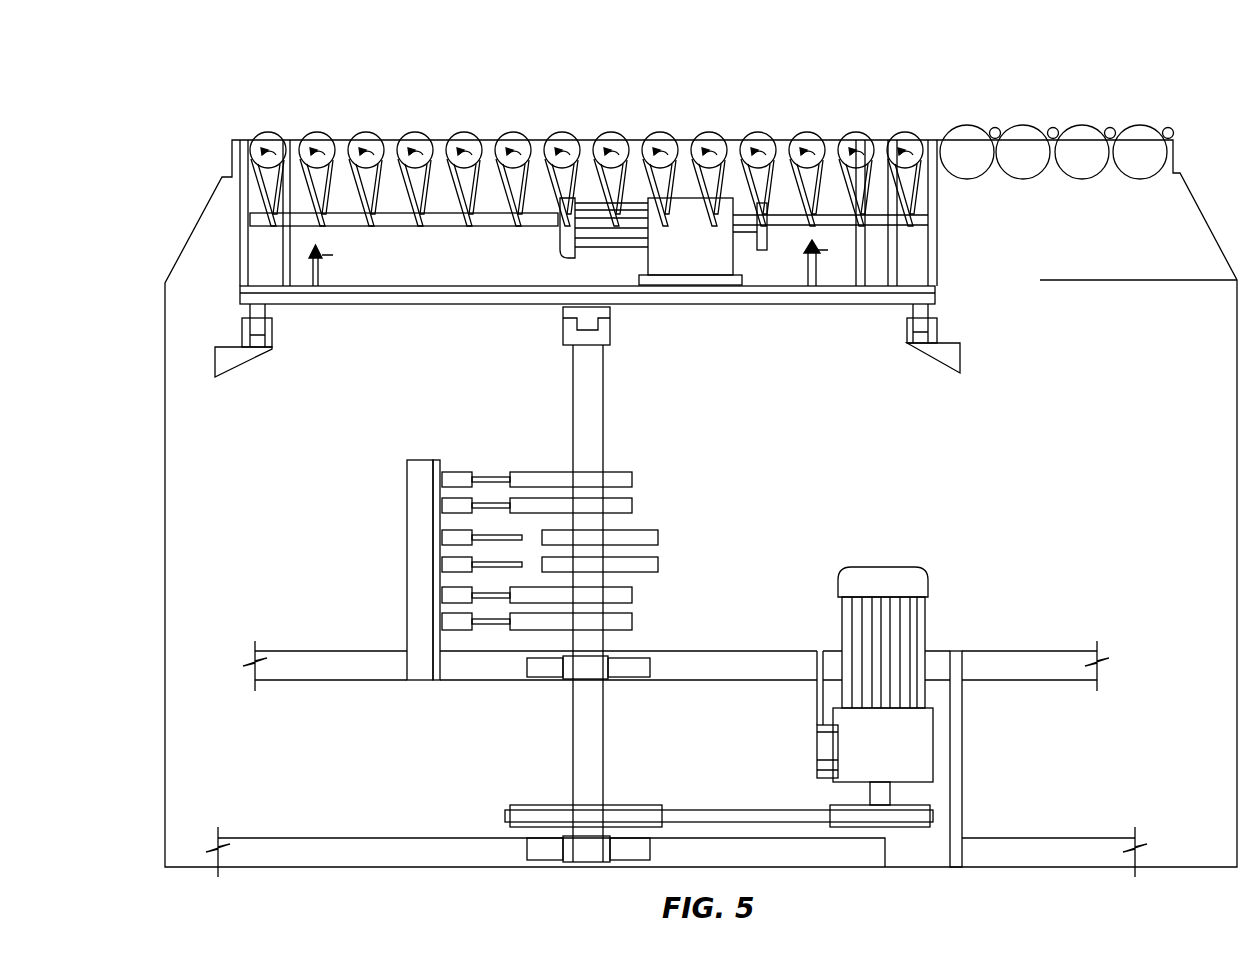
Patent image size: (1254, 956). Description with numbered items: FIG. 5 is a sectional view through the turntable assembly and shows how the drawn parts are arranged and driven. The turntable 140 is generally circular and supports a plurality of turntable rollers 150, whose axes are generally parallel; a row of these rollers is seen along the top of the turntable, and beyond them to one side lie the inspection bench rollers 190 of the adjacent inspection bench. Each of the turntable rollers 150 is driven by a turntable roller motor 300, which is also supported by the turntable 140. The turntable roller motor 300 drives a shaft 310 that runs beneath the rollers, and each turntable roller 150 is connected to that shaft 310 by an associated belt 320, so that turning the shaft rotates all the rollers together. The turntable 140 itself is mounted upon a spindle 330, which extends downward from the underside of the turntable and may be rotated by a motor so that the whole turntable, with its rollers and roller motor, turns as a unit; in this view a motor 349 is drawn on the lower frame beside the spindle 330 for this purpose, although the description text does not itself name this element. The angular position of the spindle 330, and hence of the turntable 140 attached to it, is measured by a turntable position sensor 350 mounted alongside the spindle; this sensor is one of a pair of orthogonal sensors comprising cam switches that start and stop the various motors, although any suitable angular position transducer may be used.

The turntable 140 is at (945, 282).
The turntable rollers 150 is at (467, 130).
The inspection bench rollers 190 is at (1090, 119).
The turntable roller motor 300 is at (600, 266).
The shaft 310 is at (440, 218).
The belt 320 is at (387, 142).
The spindle 330 is at (595, 422).
The motor 349 is at (939, 561).
The turntable position sensor 350 is at (647, 491).